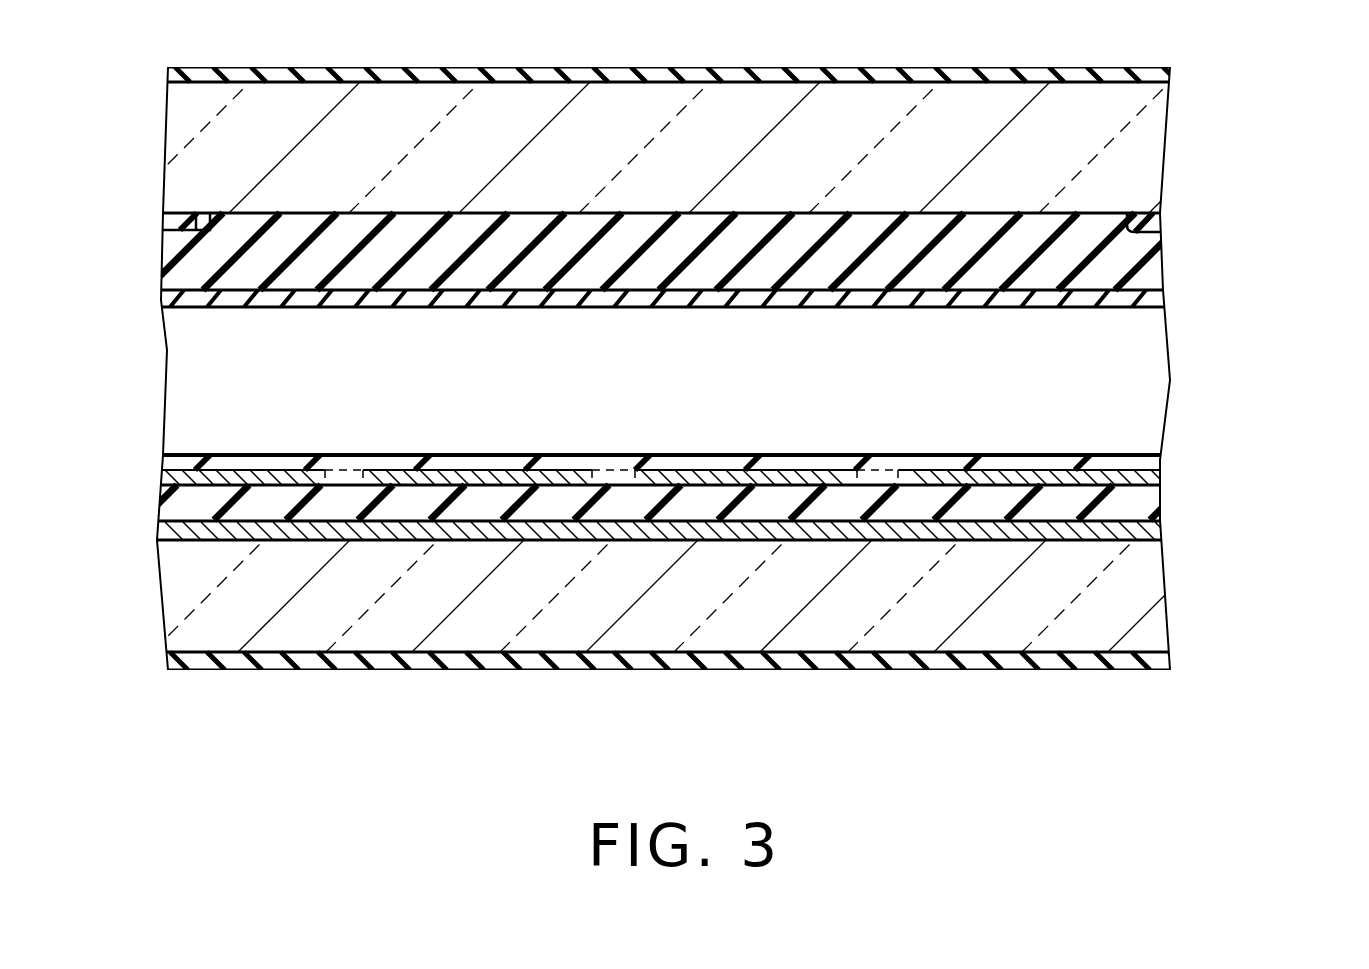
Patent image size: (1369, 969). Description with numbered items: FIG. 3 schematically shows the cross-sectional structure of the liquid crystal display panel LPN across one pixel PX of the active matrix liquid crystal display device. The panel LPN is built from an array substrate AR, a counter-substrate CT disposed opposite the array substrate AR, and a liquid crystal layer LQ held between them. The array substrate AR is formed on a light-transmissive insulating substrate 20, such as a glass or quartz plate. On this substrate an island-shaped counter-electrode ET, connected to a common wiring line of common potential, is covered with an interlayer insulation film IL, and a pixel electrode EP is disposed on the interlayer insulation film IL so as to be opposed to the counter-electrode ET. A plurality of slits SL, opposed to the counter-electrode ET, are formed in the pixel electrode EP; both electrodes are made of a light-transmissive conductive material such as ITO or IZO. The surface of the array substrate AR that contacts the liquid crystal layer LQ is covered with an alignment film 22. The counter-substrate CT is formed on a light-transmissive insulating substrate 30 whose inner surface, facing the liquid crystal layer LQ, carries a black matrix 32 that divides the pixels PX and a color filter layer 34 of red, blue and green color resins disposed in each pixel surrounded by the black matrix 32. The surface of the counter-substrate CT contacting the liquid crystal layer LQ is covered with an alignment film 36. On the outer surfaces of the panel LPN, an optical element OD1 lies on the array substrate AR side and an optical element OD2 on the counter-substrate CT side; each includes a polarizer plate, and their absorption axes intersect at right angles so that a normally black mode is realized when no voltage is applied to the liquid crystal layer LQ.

The optical element OD2 is at (175, 74).
The insulating substrate 30 is at (180, 128).
The black matrix 32 is at (165, 222).
The color filter layer 34 is at (168, 250).
The alignment film 36 is at (165, 298).
The liquid crystal layer LQ is at (188, 375).
The alignment film 22 is at (175, 463).
The pixel electrode EP is at (172, 478).
The interlayer insulation film IL is at (166, 497).
The counter-electrode ET is at (166, 530).
The insulating substrate 20 is at (176, 603).
The optical element OD1 is at (172, 660).
The slit SL is at (347, 469).
The counter-substrate CT is at (1182, 87).
The array substrate AR is at (1180, 458).
The liquid crystal display panel LPN is at (1245, 70).
The pixel PX is at (1170, 680).